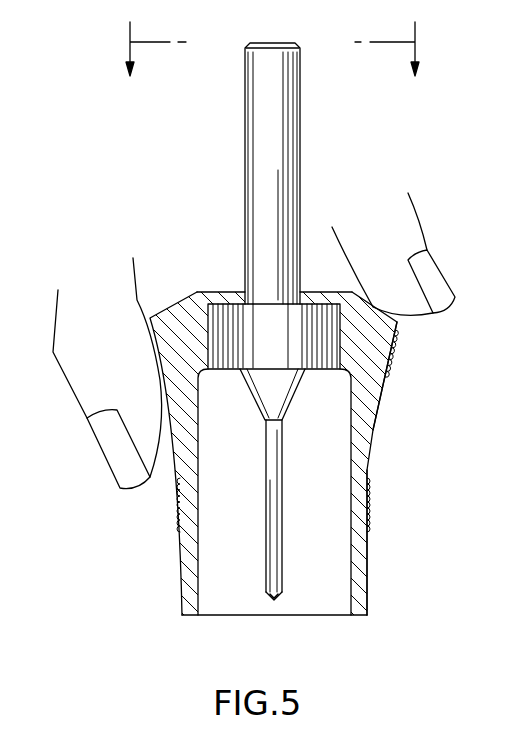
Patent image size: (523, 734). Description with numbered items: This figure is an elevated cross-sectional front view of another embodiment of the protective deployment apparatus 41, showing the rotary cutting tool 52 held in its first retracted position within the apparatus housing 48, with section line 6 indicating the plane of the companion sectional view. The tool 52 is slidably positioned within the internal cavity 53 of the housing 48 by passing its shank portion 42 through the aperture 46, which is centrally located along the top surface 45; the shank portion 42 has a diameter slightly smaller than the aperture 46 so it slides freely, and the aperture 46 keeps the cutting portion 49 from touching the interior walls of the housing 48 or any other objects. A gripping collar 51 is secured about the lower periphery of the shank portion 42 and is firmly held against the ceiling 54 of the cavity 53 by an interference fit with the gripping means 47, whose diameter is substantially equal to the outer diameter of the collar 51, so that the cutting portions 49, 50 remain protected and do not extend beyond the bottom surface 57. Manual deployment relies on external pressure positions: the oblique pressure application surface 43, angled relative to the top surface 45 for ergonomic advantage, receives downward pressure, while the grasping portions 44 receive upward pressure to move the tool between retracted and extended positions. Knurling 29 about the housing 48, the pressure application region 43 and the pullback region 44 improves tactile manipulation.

The section line 6- 6 is at (271, 38).
The knurling 29 is at (397, 347).
The protective deployment apparatus 41 is at (205, 268).
The shank portion 42 is at (288, 142).
The pressure application surface 43 is at (183, 302).
The grasping portion 44 is at (150, 342).
The top surface 45 is at (318, 292).
The aperture 46 is at (237, 295).
The gripping means 47 is at (390, 367).
The apparatus housing 48 is at (367, 512).
The cutting portion 49 is at (282, 563).
The cutting portion 50 is at (270, 596).
The gripping collar 51 is at (242, 370).
The rotary cutting tool 52 is at (275, 43).
The internal cavity 53 is at (227, 530).
The ceiling 54 is at (345, 291).
The bottom surface 57 is at (360, 617).